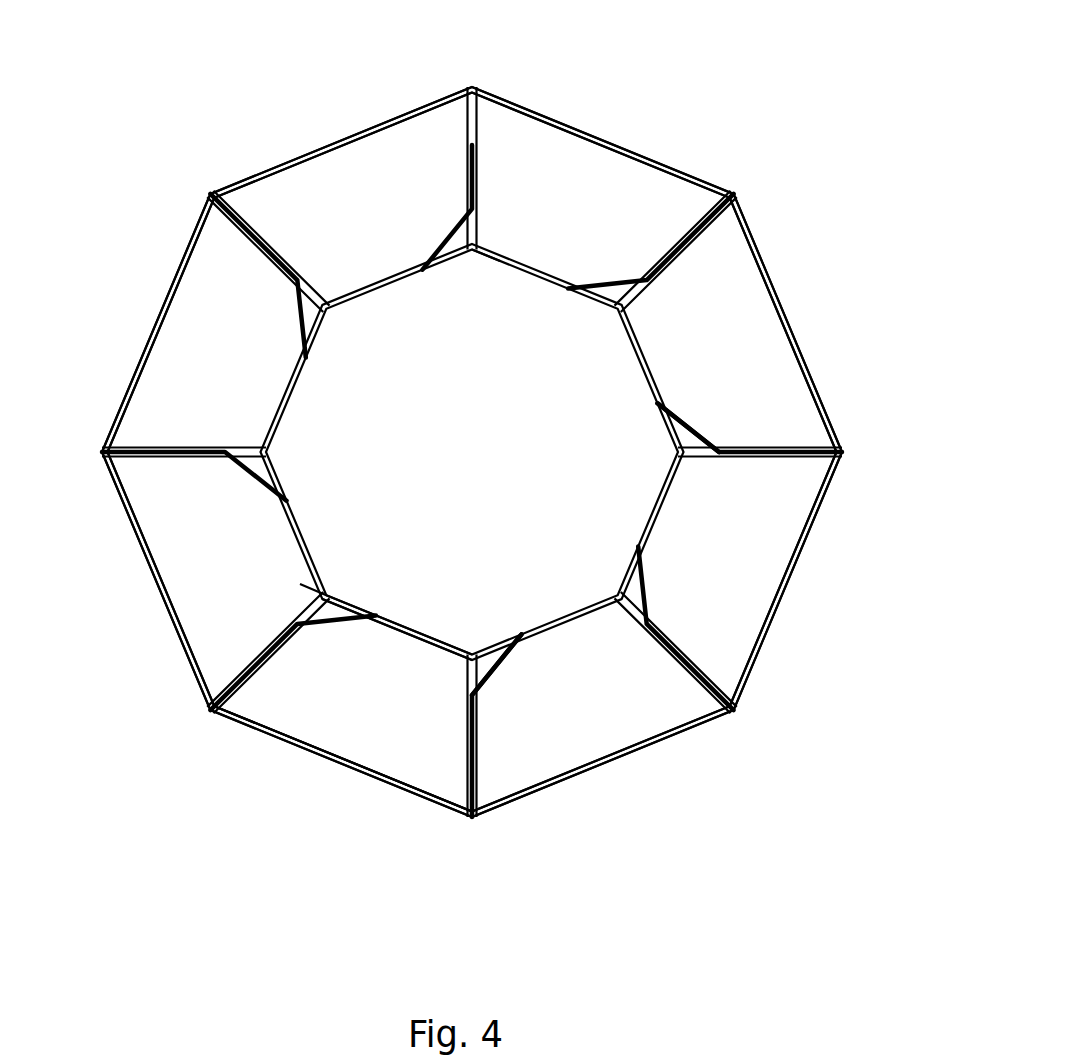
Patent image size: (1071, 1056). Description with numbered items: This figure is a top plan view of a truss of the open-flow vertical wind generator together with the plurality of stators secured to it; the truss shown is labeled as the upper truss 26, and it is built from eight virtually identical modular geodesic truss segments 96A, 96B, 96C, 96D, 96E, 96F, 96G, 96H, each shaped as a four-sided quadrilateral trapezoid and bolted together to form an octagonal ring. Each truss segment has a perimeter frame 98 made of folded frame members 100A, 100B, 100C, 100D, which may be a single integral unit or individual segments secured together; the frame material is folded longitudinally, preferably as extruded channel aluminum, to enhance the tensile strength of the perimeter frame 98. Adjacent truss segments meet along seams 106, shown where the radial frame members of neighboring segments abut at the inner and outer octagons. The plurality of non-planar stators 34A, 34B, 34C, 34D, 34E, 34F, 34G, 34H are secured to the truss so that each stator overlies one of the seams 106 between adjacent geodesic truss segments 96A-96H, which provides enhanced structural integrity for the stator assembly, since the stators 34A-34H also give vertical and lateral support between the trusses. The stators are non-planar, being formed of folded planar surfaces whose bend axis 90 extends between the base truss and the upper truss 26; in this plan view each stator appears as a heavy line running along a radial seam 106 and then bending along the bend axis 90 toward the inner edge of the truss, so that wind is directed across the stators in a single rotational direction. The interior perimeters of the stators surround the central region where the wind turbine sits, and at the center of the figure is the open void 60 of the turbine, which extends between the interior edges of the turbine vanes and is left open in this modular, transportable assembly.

The upper truss 26 is at (786, 130).
The non-planar stator 34A is at (476, 148).
The non-planar stator 34B is at (663, 283).
The non-planar stator 34C is at (767, 452).
The non-planar stator 34D is at (650, 607).
The non-planar stator 34E is at (480, 772).
The non-planar stator 34F is at (267, 662).
The non-planar stator 34G is at (170, 462).
The non-planar stator 34H is at (243, 232).
The open void 60 is at (533, 424).
The bend axis 90 is at (718, 447).
The geodesic truss segment 96A is at (575, 185).
The geodesic truss segment 96B is at (770, 335).
The geodesic truss segment 96C is at (770, 553).
The geodesic truss segment 96D is at (620, 717).
The geodesic truss segment 96E is at (380, 733).
The geodesic truss segment 96F is at (197, 603).
The geodesic truss segment 96G is at (178, 352).
The geodesic truss segment 96H is at (343, 183).
The perimeter frame 98 is at (284, 758).
The folded frame member 100A is at (466, 727).
The folded frame member 100B is at (413, 797).
The folded frame member 100C is at (238, 720).
The folded frame member 100D is at (448, 637).
The seam 106 is at (483, 253).